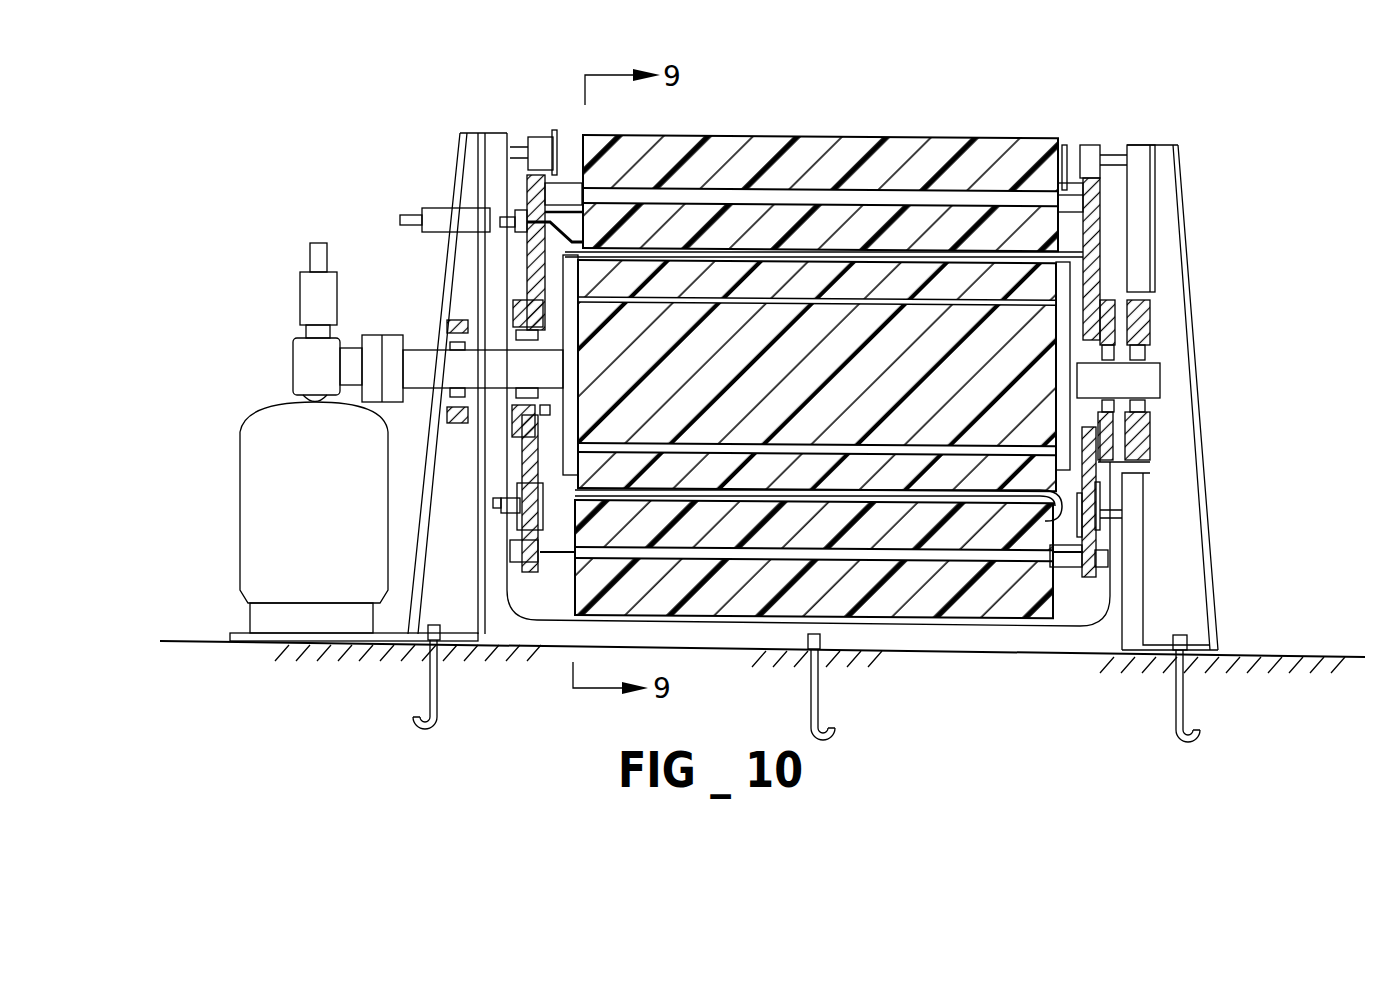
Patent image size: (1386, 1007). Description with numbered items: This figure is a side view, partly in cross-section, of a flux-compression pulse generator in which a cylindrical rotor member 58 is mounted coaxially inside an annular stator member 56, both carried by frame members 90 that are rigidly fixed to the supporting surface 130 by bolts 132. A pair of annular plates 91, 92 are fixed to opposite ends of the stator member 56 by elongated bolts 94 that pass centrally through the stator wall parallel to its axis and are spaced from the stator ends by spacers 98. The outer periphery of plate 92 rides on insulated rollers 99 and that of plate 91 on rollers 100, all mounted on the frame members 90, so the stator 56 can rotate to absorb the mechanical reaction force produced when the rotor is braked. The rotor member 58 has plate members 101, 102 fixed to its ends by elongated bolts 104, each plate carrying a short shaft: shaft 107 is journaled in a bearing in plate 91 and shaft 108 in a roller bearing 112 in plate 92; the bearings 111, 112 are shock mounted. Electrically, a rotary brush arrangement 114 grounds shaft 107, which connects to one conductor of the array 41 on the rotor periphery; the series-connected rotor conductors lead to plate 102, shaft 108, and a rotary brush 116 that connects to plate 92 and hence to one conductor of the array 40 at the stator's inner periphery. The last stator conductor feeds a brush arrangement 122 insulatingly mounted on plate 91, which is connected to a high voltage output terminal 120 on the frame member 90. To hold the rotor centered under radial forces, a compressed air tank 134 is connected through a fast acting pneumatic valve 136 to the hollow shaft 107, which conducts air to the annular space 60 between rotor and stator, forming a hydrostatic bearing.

The array of elongated electrical conductors 40 is at (887, 243).
The array of elongated conductors 41 is at (766, 264).
The annular stator member 56 is at (798, 156).
The cylindrical rotor member 58 is at (848, 393).
The annular space 60 is at (1050, 522).
The frame members 90 is at (470, 162).
The annular plate 91 is at (527, 467).
The annular plate 92 is at (1100, 265).
The elongated bolts 94 is at (865, 198).
The spacers 98 is at (567, 143).
The insulated rollers 99 is at (1097, 146).
The rollers 100 is at (540, 136).
The plate member 101 is at (578, 397).
The plate member 102 is at (1055, 372).
The elongated bolts 104 is at (764, 306).
The shaft 107 is at (428, 360).
The shaft 108 is at (1163, 387).
The bearing 111 is at (560, 333).
The roller bearing 112 is at (1040, 348).
The rotary brush arrangement 114 is at (460, 320).
The rotary brush 116 is at (1150, 330).
The high voltage output terminal 120 is at (420, 215).
The brush arrangement 122 is at (508, 218).
The supporting surface 130 is at (1276, 657).
The bolts 132 is at (440, 700).
The compressed air tank 134 is at (334, 536).
The fast acting pneumatic valve 136 is at (300, 308).